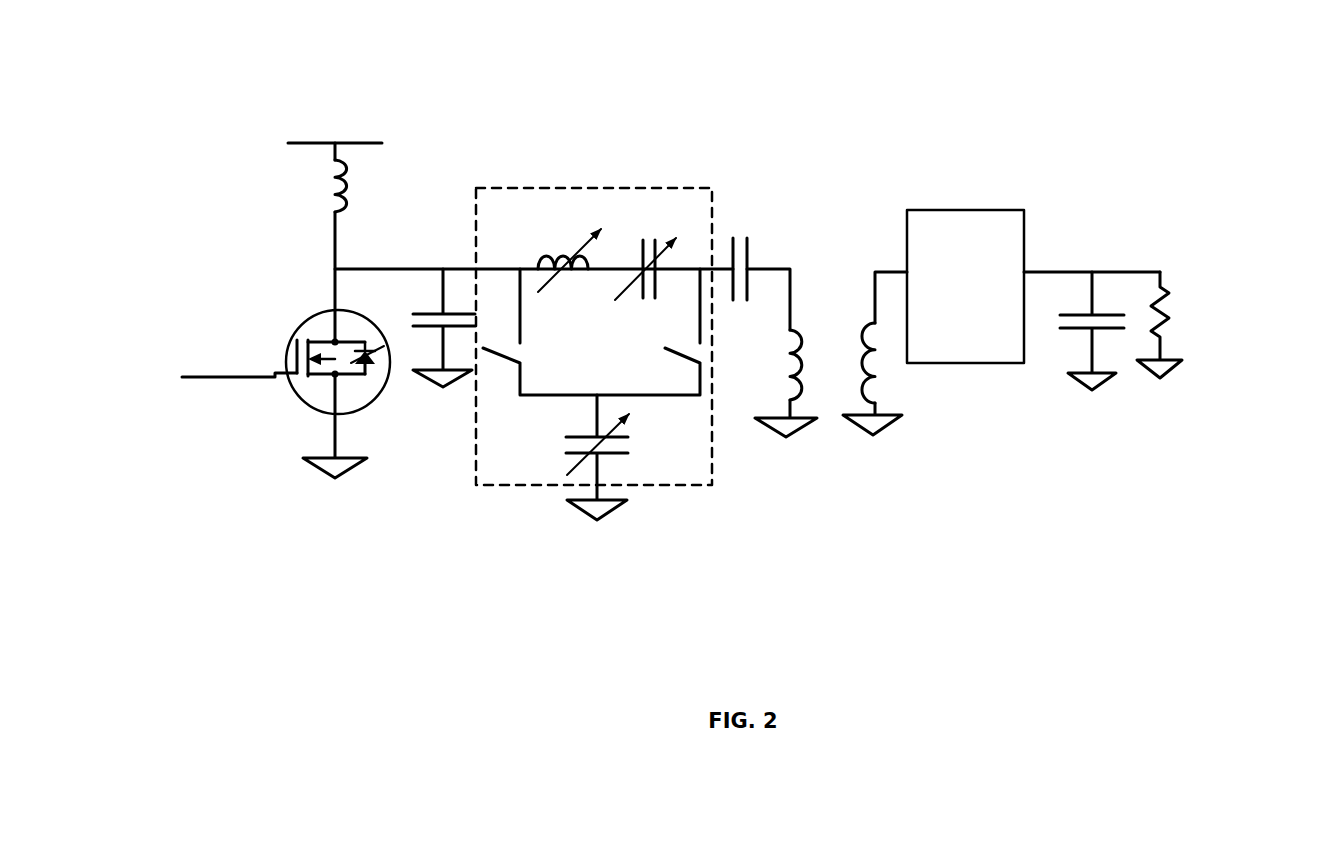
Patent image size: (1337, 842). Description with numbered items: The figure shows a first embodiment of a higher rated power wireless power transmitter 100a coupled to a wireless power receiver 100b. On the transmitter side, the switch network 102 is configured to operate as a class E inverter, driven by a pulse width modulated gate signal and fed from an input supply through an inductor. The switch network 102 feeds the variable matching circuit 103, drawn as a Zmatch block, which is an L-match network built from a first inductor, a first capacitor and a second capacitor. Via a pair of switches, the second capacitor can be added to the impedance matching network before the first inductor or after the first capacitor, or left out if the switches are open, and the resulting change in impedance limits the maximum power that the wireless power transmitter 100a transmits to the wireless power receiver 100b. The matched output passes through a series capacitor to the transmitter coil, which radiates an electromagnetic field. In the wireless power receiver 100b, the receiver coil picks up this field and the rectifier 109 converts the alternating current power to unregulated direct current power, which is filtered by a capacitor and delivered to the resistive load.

The wireless power transmitter 100a is at (571, 88).
The wireless power receiver 100b is at (993, 82).
The switch network 102 is at (251, 319).
The variable matching circuit 103 is at (609, 173).
The rectifier 109 is at (978, 223).